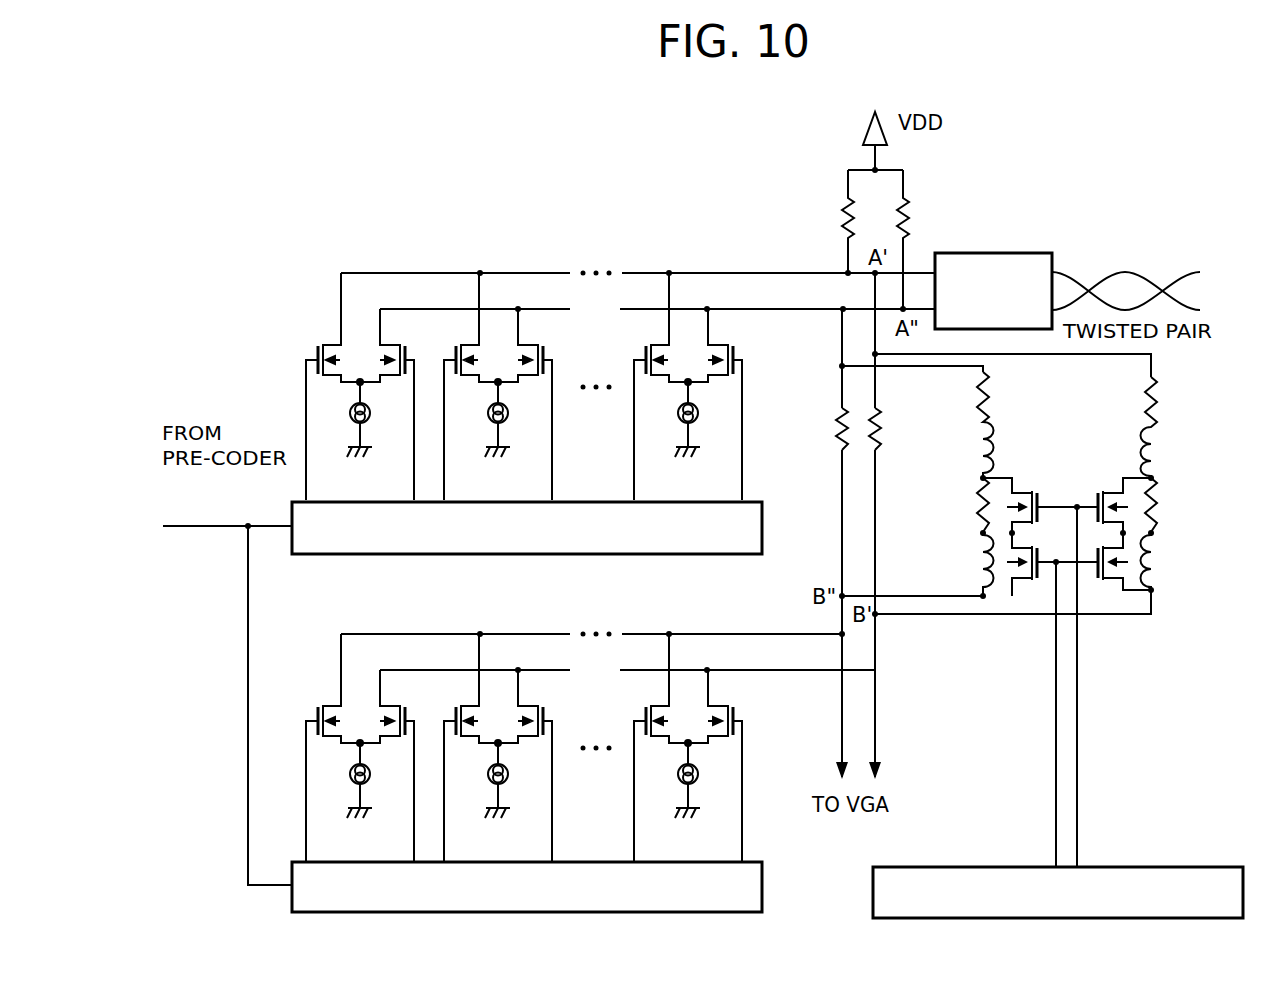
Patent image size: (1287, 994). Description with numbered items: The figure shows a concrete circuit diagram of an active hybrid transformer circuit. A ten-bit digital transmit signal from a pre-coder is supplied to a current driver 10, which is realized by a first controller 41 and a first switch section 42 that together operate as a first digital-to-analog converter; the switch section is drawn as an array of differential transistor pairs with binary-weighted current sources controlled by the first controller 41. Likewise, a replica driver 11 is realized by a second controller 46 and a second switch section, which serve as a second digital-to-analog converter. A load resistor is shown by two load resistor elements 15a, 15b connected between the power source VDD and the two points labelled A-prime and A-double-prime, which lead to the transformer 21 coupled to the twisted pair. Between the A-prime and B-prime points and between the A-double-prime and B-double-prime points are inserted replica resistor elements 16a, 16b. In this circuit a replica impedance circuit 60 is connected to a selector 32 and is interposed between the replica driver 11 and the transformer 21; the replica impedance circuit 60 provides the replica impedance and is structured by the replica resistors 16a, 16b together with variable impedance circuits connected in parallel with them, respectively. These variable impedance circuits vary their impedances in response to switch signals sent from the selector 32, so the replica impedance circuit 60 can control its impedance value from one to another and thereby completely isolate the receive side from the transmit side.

The current driver 10 is at (288, 378).
The replica driver 11 is at (236, 817).
The load resistor element 15a is at (840, 214).
The load resistor element 15b is at (912, 217).
The replica resistor element 16a is at (882, 430).
The replica resistor element 16b is at (832, 432).
The transformer 21 is at (1014, 253).
The selector 32 is at (955, 867).
The first controller 41 is at (741, 556).
The first switch section 42 is at (737, 352).
The second controller 46 is at (763, 887).
The replica impedance circuit 60 is at (1190, 533).